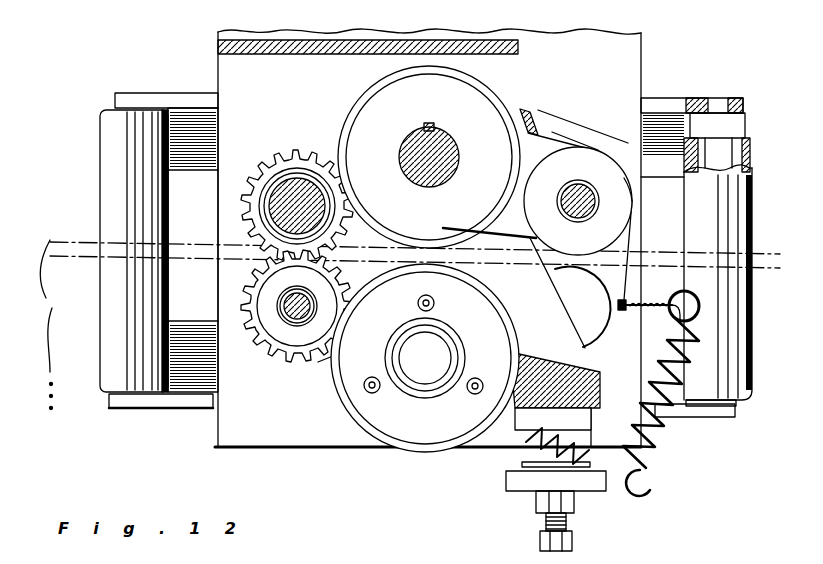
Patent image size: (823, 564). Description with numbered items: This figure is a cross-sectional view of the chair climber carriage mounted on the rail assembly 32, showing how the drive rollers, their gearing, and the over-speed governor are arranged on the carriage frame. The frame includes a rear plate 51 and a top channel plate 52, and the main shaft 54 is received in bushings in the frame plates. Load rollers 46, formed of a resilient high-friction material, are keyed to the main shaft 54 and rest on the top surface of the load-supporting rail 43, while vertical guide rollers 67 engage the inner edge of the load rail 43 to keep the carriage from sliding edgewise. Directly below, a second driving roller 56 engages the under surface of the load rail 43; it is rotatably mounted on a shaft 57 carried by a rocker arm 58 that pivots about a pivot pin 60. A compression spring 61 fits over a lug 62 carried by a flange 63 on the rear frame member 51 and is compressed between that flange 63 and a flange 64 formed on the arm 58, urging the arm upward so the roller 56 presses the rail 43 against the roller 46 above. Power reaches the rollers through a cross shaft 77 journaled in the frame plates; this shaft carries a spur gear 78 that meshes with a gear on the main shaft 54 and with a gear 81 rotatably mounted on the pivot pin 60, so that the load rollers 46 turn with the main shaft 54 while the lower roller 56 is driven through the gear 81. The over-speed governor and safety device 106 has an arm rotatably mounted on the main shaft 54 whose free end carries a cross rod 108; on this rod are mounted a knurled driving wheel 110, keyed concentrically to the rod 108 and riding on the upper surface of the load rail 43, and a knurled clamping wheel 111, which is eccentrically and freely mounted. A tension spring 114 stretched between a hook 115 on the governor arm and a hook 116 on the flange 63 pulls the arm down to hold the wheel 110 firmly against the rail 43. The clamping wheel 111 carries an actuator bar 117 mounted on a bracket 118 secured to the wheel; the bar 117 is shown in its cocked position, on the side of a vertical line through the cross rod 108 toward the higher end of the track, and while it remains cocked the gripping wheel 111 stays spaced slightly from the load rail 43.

The rail assembly 32 is at (48, 306).
The load-supporting rail 43 is at (68, 246).
The load rollers 46 is at (478, 104).
The rear plate 51 is at (628, 78).
The top channel plate 52 is at (386, 40).
The main shaft 54 is at (444, 140).
The second driving roller 56 is at (468, 300).
The shaft 57 is at (440, 354).
The rocker arm 58 is at (326, 370).
The pivot pin 60 is at (296, 308).
The compression spring 61 is at (520, 456).
The lug 62 is at (560, 462).
The flange 63 is at (588, 492).
The flange 64 is at (565, 416).
The vertical guide rollers 67 is at (102, 150).
The cross shaft 77 is at (306, 178).
The spur gear 78 is at (280, 172).
The gear 81 is at (258, 293).
The over-speed governor and safety device 106 is at (562, 128).
The cross rod 108 is at (572, 192).
The knurled driving wheel 110 is at (608, 174).
The knurled clamping wheel 111 is at (630, 172).
The tension spring 114 is at (662, 432).
The hook 115 is at (690, 300).
The hook 116 is at (650, 488).
The actuator bar 117 is at (528, 112).
The bracket 118 is at (574, 134).